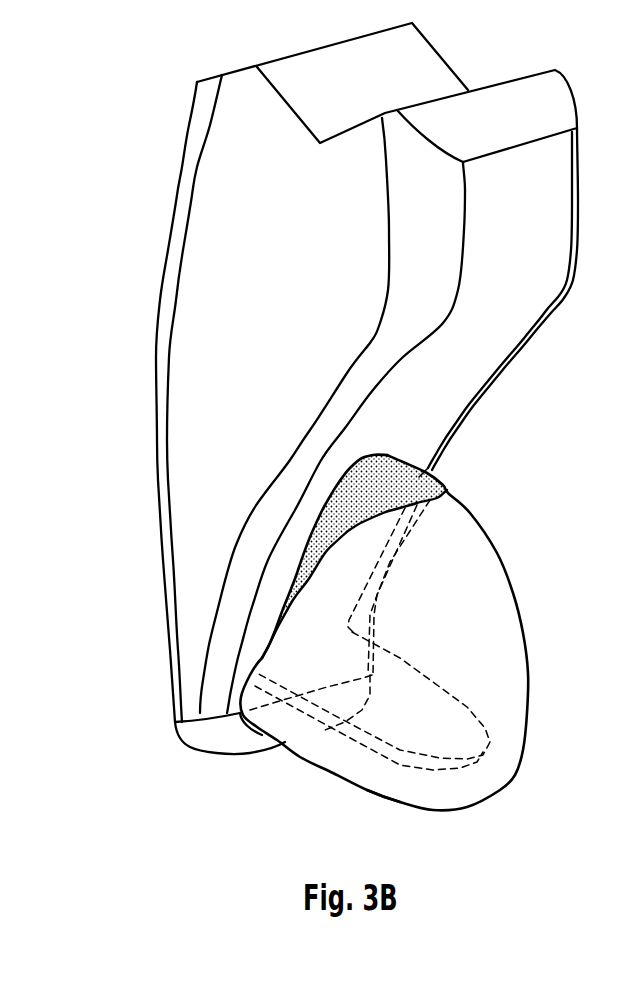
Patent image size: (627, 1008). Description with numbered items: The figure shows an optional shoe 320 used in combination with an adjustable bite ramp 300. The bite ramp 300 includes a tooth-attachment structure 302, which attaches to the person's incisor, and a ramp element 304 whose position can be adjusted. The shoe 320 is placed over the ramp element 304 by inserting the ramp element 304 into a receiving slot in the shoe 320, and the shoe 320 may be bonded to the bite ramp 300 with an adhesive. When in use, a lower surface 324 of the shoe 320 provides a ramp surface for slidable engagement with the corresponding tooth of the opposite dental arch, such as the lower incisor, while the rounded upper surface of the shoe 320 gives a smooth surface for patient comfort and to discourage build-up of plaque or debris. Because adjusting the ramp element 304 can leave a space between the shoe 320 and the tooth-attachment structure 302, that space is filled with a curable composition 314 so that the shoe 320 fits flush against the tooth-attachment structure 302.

The adjustable bite ramp 300 is at (310, 640).
The tooth-attachment structure 302 is at (312, 519).
The ramp element 304 is at (392, 760).
The curable composition 314 is at (415, 462).
The shoe 320 is at (493, 648).
The lower surface 324 is at (312, 762).